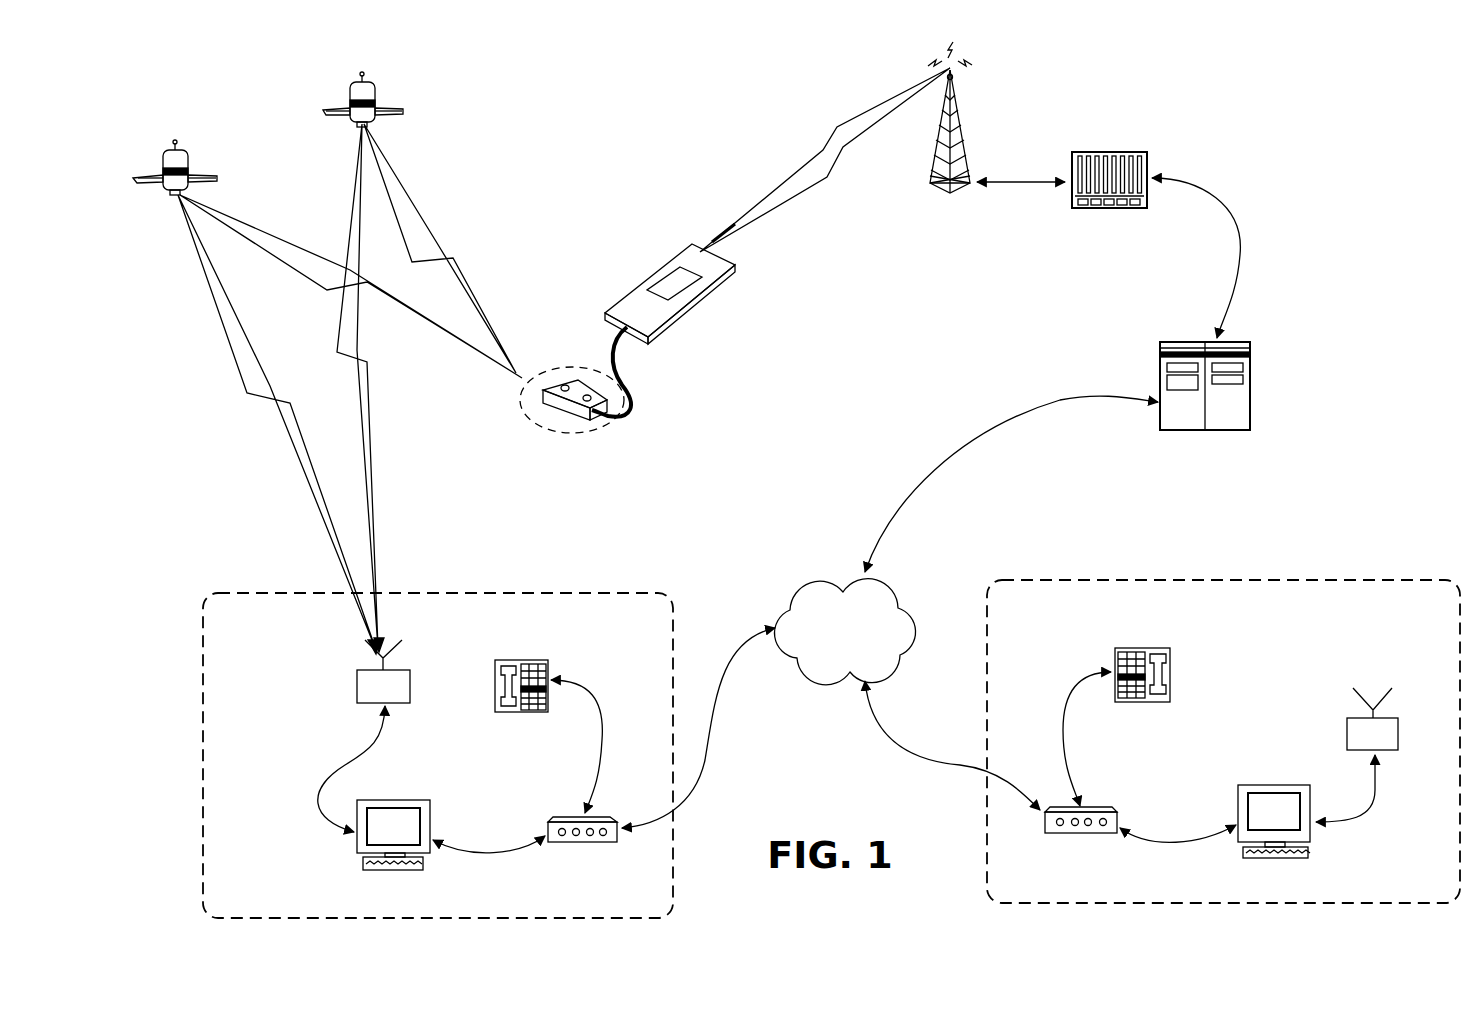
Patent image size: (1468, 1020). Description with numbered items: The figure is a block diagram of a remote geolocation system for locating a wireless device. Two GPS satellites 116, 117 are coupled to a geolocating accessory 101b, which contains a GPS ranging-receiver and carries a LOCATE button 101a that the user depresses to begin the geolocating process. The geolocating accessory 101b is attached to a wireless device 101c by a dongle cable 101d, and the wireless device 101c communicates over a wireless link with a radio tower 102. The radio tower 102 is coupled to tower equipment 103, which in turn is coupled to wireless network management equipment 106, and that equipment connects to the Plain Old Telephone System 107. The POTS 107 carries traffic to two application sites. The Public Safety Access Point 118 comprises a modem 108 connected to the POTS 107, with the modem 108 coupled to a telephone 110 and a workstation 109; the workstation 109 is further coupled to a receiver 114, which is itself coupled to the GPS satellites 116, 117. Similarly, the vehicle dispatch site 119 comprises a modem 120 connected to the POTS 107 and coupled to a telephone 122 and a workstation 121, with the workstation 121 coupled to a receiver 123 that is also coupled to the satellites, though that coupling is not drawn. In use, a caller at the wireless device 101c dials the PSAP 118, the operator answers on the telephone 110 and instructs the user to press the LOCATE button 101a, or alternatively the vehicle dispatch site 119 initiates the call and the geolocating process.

The LOCATE button 101a is at (565, 385).
The geolocating accessory 101b is at (571, 433).
The wireless device 101c is at (713, 287).
The dongle cable 101d is at (626, 384).
The radio tower 102 is at (955, 102).
The tower equipment 103 is at (1108, 152).
The wireless network management equipment 106 is at (1197, 342).
The Plain Old Telephone System (POTS) 107 is at (823, 570).
The modem 108 is at (578, 820).
The workstation 109 is at (393, 800).
The telephone 110 is at (522, 658).
The receiver 114 is at (395, 683).
The GPS satellite 116 is at (173, 147).
The GPS satellite 117 is at (358, 87).
The Public Safety Access Point (PSAP) 118 is at (437, 592).
The vehicle dispatch site 119 is at (1223, 578).
The modem 120 is at (1098, 812).
The workstation 121 is at (1273, 785).
The telephone 122 is at (1143, 647).
The receiver 123 is at (1372, 708).